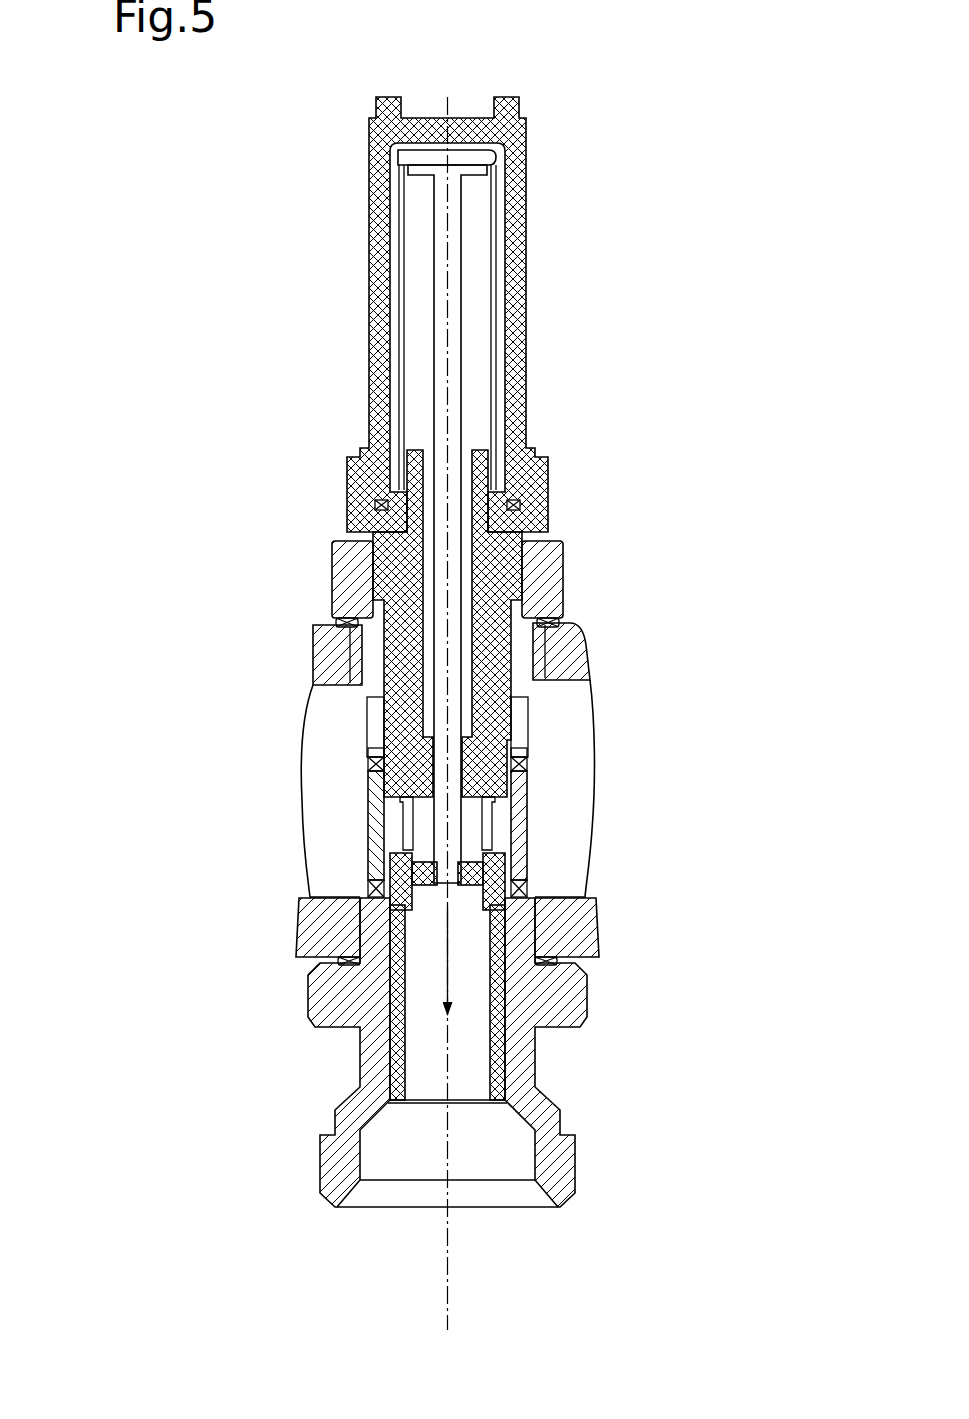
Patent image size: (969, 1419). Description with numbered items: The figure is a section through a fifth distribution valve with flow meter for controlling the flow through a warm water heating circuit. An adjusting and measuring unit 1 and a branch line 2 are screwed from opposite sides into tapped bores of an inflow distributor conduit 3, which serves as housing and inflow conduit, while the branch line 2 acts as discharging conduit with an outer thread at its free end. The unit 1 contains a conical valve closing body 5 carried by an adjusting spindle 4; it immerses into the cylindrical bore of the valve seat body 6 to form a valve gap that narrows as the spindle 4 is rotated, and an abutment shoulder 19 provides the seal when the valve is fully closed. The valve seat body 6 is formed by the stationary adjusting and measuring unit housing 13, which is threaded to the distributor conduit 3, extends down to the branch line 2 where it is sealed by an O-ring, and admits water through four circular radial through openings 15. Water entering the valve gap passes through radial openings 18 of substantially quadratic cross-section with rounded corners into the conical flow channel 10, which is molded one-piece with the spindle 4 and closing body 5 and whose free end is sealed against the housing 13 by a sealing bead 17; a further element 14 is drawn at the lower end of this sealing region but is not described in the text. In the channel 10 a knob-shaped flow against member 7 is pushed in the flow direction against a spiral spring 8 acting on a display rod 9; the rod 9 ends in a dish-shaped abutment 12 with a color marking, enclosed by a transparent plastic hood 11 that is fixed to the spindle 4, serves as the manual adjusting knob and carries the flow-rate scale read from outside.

The adjusting and measuring unit 1 is at (265, 535).
The branch line 2 is at (373, 1054).
The inflow distributor conduit 3 is at (568, 660).
The adjusting spindle 4 is at (528, 572).
The valve closing body 5 is at (378, 792).
The valve seat body 6 is at (378, 768).
The flow against member 7 is at (423, 873).
The spiral spring 8 is at (402, 325).
The display rod 9 is at (452, 295).
The flow channel 10 is at (470, 1078).
The transparent plastic hood 11 is at (512, 166).
The dish-shaped abutment 12 is at (412, 157).
The adjusting and measuring unit housing 13 is at (345, 583).
The sealing ring 14 is at (527, 885).
The radial through openings 15 is at (527, 728).
The sealing bead 17 is at (508, 858).
The radial openings 18 is at (488, 825).
The abutment shoulder 19 is at (378, 755).